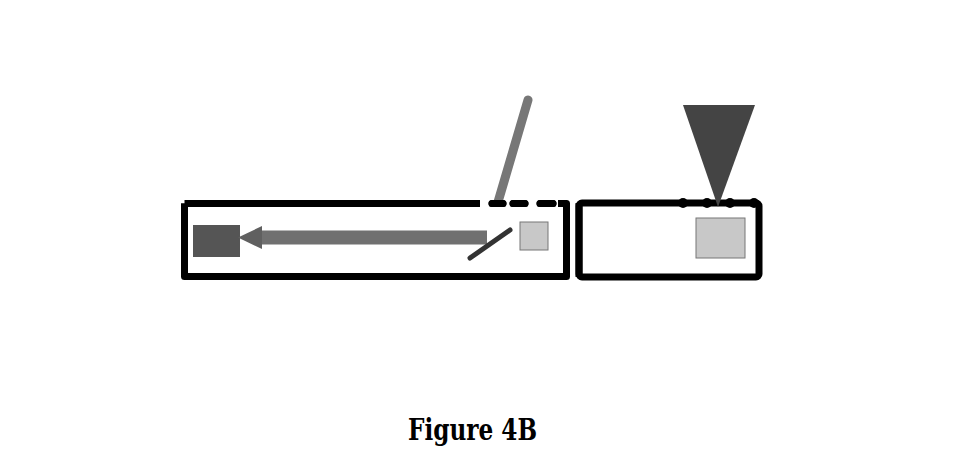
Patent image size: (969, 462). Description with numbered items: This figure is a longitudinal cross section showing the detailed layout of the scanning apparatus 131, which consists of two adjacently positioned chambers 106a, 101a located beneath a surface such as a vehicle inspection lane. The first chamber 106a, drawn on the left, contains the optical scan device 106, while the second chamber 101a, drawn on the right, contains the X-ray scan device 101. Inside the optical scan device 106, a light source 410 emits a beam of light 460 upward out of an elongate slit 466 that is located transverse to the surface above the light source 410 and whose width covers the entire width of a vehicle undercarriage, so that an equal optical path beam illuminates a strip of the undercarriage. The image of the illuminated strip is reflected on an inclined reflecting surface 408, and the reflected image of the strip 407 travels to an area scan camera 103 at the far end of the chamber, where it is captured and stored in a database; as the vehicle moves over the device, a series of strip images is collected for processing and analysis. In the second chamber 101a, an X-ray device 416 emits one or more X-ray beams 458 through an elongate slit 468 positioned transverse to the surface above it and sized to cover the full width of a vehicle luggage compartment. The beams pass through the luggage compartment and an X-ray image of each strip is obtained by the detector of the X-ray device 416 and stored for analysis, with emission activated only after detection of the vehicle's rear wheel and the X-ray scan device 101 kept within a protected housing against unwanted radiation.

The X-ray scan device 101 is at (695, 291).
The second chamber 101a is at (583, 199).
The area scan camera 103 is at (217, 247).
The optical scan device 106 is at (285, 300).
The first chamber 106a is at (186, 199).
The scanning apparatus 131 is at (106, 288).
The reflected image of the strip 407 is at (343, 246).
The inclined reflecting surface 408 is at (482, 259).
The light source 410 is at (542, 238).
The X-ray device 416 is at (735, 235).
The X-ray beams 458 is at (745, 103).
The beam of light 460 is at (553, 110).
The elongate slit 466 is at (485, 200).
The elongate slit 468 is at (732, 198).